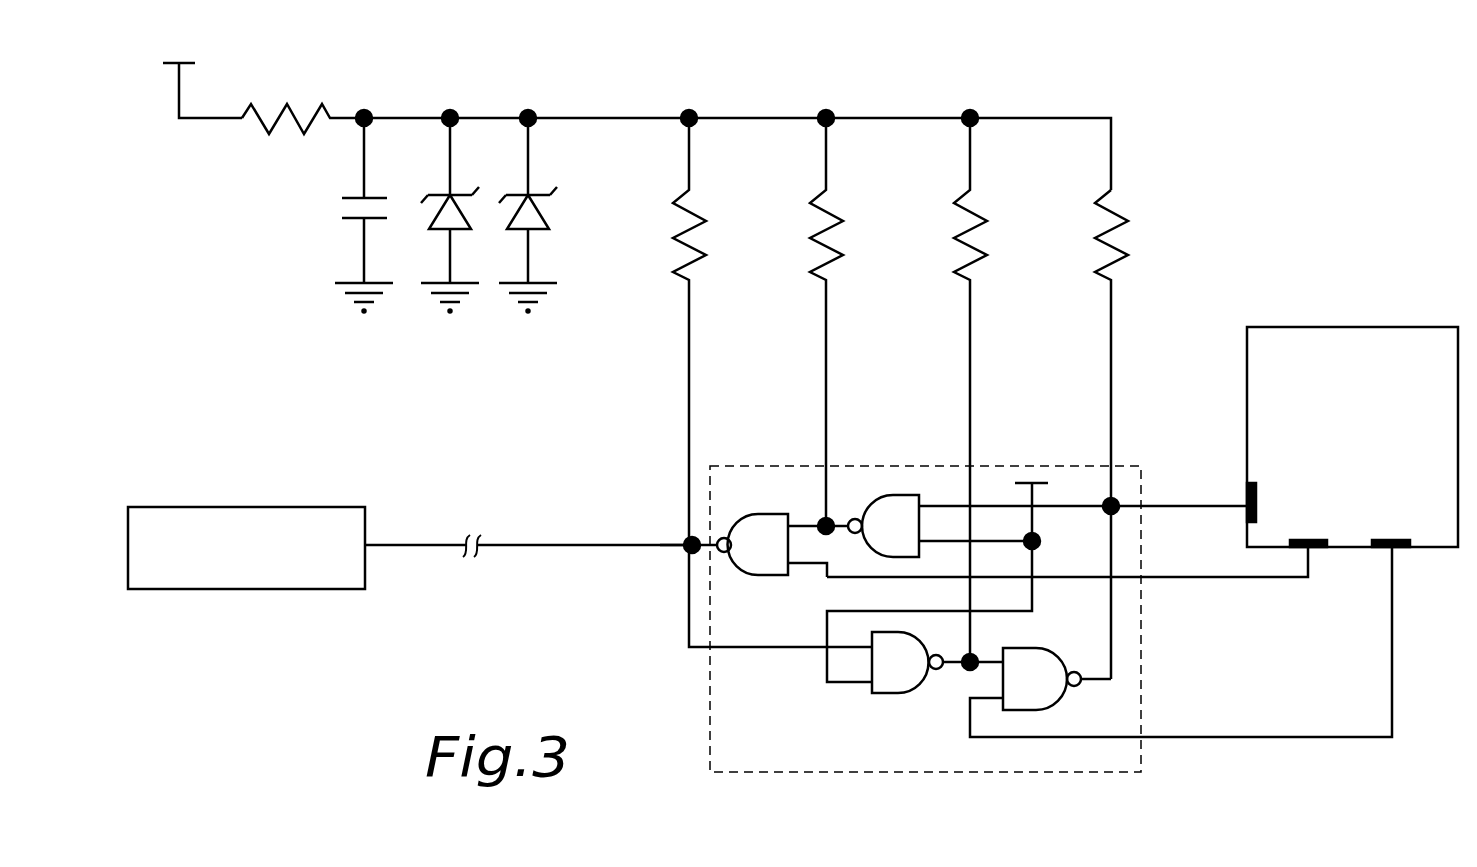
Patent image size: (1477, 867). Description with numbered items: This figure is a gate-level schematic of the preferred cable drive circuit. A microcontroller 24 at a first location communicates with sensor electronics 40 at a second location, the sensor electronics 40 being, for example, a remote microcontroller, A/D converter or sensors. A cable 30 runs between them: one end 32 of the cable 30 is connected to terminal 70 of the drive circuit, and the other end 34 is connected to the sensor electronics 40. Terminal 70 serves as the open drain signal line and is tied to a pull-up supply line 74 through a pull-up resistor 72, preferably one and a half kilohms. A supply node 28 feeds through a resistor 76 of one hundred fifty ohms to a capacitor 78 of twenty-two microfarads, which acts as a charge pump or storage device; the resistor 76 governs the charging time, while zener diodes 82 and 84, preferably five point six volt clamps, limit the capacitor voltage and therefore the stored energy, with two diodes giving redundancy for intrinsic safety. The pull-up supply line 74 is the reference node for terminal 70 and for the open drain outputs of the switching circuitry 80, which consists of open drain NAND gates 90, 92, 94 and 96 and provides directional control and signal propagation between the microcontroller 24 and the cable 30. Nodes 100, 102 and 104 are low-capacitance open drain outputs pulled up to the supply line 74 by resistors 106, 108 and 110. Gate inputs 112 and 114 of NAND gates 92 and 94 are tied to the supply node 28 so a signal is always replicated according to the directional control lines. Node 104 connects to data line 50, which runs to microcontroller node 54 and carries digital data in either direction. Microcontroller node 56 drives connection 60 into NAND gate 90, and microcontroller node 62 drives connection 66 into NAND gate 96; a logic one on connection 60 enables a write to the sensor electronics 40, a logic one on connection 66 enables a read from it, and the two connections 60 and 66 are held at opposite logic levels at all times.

The microcontroller 24 is at (1365, 327).
The supply node 28 is at (185, 63).
The cable 30 is at (522, 545).
The cable end 32 is at (690, 548).
The cable end 34 is at (400, 545).
The sensor electronics 40 is at (228, 507).
The data line 50 is at (1185, 505).
The microcontroller node 54 is at (1257, 500).
The microcontroller node 56 is at (1312, 540).
The connection 60 is at (1213, 578).
The microcontroller node 62 is at (1393, 548).
The connection 66 is at (1232, 737).
The terminal 70 is at (688, 540).
The pull-up resistor 72 is at (677, 272).
The pull-up supply line 74 is at (612, 117).
The resistor 76 is at (286, 104).
The capacitor 78 is at (350, 218).
The switching circuitry 80 is at (713, 697).
The zener diode 82 is at (432, 226).
The zener diode 84 is at (507, 230).
The open drain NAND gate 90 is at (757, 576).
The open drain NAND gate 92 is at (903, 496).
The open drain NAND gate 94 is at (880, 694).
The open drain NAND gate 96 is at (1020, 713).
The node 100 is at (833, 520).
The node 102 is at (968, 670).
The node 104 is at (1114, 500).
The resistor 106 is at (813, 272).
The resistor 108 is at (954, 272).
The resistor 110 is at (1096, 272).
The gate input 112 is at (951, 534).
The gate input 114 is at (838, 683).